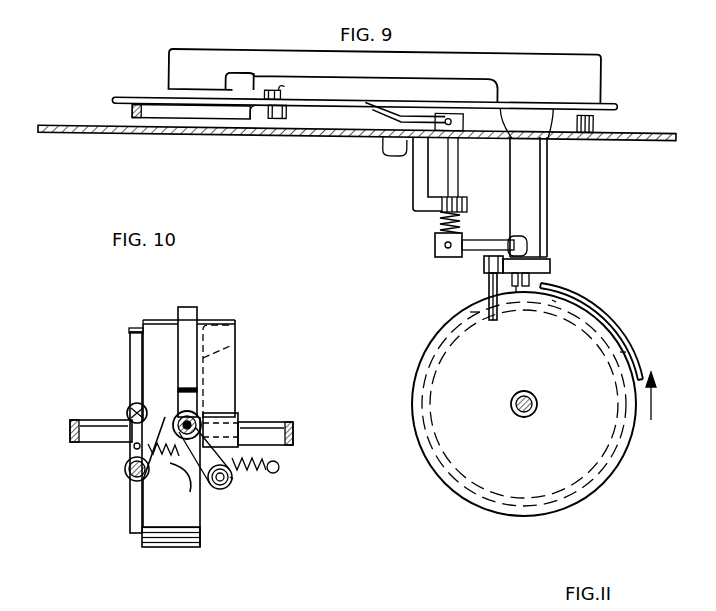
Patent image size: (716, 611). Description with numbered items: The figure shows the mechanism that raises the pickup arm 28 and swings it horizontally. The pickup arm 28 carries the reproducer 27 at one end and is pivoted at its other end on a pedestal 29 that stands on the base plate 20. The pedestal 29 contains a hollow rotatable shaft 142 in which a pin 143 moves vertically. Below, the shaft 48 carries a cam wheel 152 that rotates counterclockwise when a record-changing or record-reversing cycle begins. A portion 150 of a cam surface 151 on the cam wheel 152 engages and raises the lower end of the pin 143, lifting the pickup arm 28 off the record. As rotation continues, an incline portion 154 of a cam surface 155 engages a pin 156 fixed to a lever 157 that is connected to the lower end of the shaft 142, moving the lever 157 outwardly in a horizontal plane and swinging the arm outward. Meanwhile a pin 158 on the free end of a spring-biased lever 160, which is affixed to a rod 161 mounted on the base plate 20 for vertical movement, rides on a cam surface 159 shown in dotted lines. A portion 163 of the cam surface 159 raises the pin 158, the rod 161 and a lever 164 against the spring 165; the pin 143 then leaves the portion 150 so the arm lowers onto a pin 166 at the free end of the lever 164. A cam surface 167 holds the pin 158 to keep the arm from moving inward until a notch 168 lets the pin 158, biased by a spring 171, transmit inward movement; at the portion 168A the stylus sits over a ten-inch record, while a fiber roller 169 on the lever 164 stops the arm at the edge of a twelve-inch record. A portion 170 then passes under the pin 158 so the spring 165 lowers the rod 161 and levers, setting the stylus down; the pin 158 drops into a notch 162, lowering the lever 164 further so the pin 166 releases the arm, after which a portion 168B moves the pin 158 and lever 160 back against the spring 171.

In FIG. 9, the base plate 20 is at (626, 140).
In FIG. 9, the reproducer 27 is at (212, 55).
In FIG. 9, the pickup arm 28 is at (474, 58).
In FIG. 9, the pedestal 29 is at (532, 181).
In FIG. 9, the shaft 48 is at (538, 403).
In FIG. 10, the shaft 48 is at (86, 420).
In FIG. 10, the hollow rotatable shaft 142 is at (202, 428).
In FIG. 9, the pin 143 is at (550, 266).
In FIG. 10, the pin 143 is at (178, 416).
In FIG. 9, the portion of cam surface 150 is at (594, 302).
In FIG. 10, the portion of cam surface 150 is at (190, 307).
In FIG. 9, the cam surface 151 is at (432, 338).
In FIG. 10, the cam surface 151 is at (143, 549).
In FIG. 9, the cam wheel 152 is at (600, 456).
In FIG. 10, the cam wheel 152 is at (200, 527).
In FIG. 10, the incline portion 154 is at (226, 410).
In FIG. 10, the cam surface 155 is at (238, 349).
In FIG. 9, the pin 156 is at (488, 287).
In FIG. 10, the pin 156 is at (234, 480).
In FIG. 9, the lever 157 is at (484, 267).
In FIG. 10, the lever 157 is at (226, 490).
In FIG. 9, the pin 158 is at (523, 293).
In FIG. 10, the pin 158 is at (130, 410).
In FIG. 9, the cam surface 159 is at (622, 352).
In FIG. 10, the cam surface 159 is at (146, 331).
In FIG. 9, the spring-biased lever 160 is at (464, 245).
In FIG. 10, the spring-biased lever 160 is at (130, 447).
In FIG. 9, the rod 161 is at (453, 171).
In FIG. 10, the rod 161 is at (127, 471).
In FIG. 9, the notch 162 is at (520, 291).
In FIG. 9, the portion of cam surface 163 is at (557, 303).
In FIG. 9, the lever 164 is at (352, 118).
In FIG. 9, the spring 165 is at (438, 222).
In FIG. 9, the pin 166 is at (279, 89).
In FIG. 10, the cam surface 167 is at (150, 294).
In FIG. 10, the notch 168 is at (146, 478).
In FIG. 10, the portion of notch 168A is at (179, 491).
In FIG. 10, the portion of notch 168B is at (150, 441).
In FIG. 9, the fiber roller 169 is at (287, 119).
In FIG. 9, the portion of cam surface 170 is at (470, 314).
In FIG. 10, the spring 171 is at (266, 452).